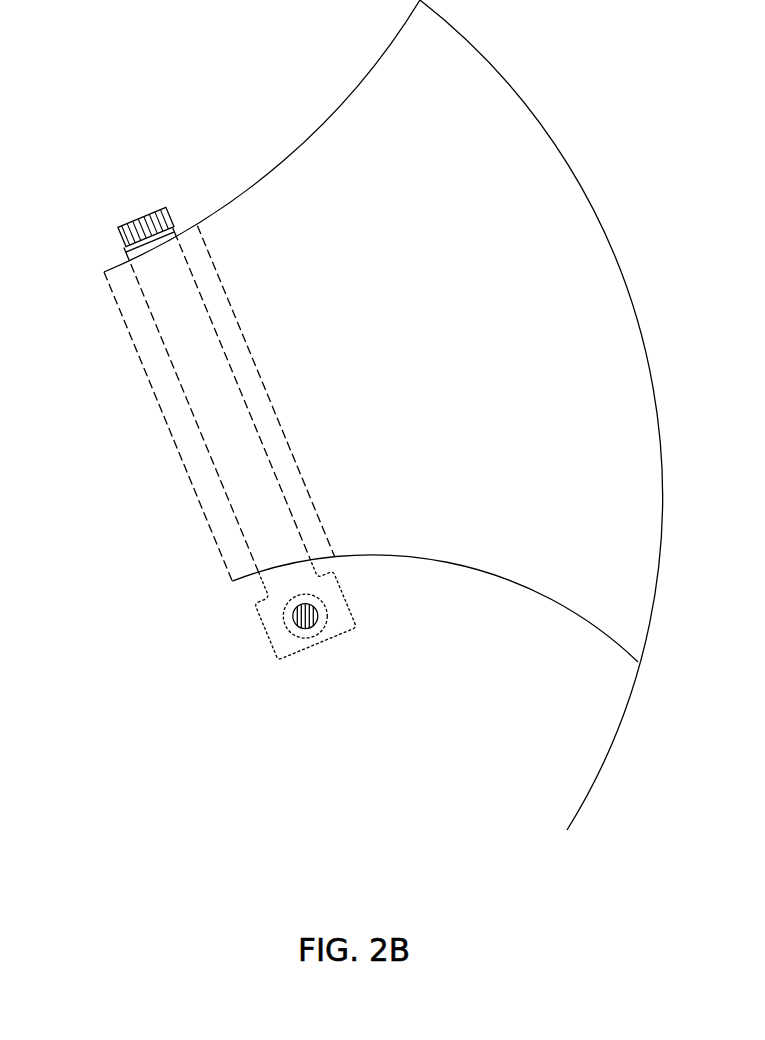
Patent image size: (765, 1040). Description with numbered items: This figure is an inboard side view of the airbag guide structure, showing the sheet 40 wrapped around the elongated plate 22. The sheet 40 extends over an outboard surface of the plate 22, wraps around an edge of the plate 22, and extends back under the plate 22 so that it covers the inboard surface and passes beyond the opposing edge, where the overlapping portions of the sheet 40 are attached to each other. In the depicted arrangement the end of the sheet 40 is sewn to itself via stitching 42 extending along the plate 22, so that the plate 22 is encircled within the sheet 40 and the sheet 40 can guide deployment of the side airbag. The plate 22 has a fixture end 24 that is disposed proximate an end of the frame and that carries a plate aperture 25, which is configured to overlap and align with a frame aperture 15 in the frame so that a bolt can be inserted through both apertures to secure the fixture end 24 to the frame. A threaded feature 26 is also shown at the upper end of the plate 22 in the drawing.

The sheet 40 is at (521, 356).
The stitching 42 is at (248, 347).
The elongated plate 22 is at (183, 392).
The threaded end 26 is at (137, 225).
The fixture end 24 is at (265, 615).
The plate aperture 25 is at (322, 618).
The frame aperture 15 is at (305, 630).